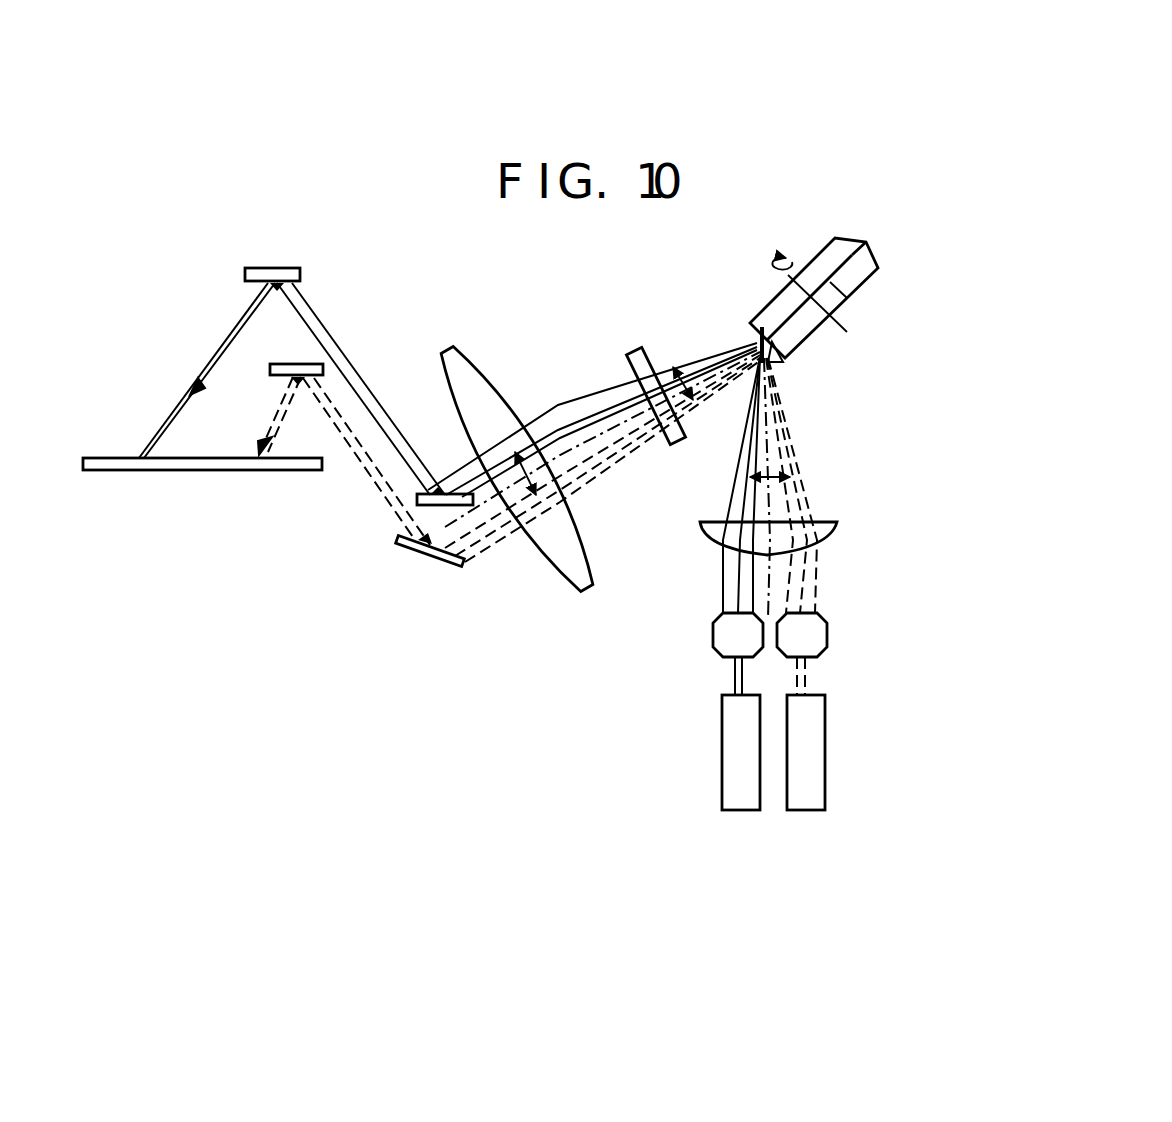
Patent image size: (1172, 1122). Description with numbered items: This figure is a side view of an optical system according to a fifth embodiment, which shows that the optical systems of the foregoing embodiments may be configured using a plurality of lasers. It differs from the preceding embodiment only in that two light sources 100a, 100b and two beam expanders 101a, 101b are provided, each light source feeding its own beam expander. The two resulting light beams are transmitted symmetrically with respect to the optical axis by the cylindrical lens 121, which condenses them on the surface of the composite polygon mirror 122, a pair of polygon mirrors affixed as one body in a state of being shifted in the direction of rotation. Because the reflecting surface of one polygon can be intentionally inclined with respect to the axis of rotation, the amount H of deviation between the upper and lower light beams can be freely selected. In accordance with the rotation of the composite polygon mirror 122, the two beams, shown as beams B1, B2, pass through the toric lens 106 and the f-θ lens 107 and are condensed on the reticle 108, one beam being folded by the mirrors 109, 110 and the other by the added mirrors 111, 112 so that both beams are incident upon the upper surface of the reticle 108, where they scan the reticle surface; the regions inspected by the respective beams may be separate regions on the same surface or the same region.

The light source 100a is at (722, 754).
The light source 100b is at (826, 752).
The beam expander 101a is at (713, 637).
The beam expander 101b is at (828, 636).
The toric lens 106 is at (631, 357).
The f-θ lens 107 is at (452, 357).
The reticle 108 is at (88, 458).
The mirror 109 is at (420, 500).
The mirror 110 is at (301, 273).
The mirror 111 is at (456, 566).
The mirror 112 is at (271, 366).
The cylindrical lens 121 is at (838, 523).
The composite polygon mirror 122 is at (862, 265).
The amount of deviation H is at (556, 443).
The first beam B1 is at (173, 369).
The second beam B2 is at (237, 416).